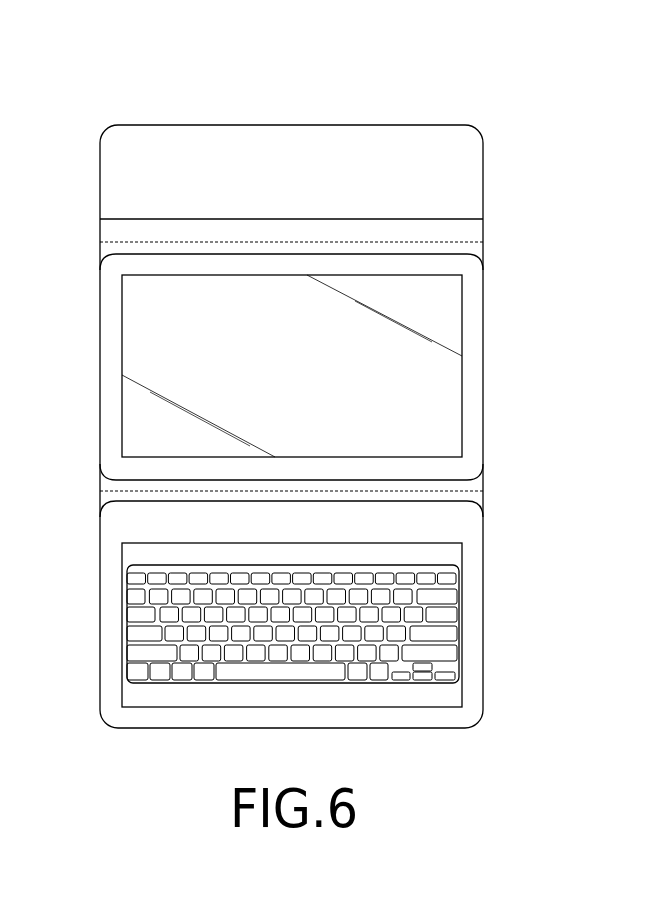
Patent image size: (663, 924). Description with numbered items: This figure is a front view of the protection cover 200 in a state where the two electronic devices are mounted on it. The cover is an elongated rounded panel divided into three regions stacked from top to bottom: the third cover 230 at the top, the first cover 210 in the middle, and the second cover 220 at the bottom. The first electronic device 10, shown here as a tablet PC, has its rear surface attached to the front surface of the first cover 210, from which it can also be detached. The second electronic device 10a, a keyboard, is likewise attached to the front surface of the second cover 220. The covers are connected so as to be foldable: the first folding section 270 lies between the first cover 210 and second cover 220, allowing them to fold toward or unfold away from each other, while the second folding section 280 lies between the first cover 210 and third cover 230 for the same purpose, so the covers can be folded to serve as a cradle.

The protection cover 200 is at (353, 84).
The first electronic device 10 is at (105, 367).
The second electronic device 10a is at (105, 612).
The first cover 210 is at (483, 365).
The second cover 220 is at (483, 613).
The third cover 230 is at (483, 177).
The first folding section 270 is at (483, 490).
The second folding section 280 is at (483, 243).